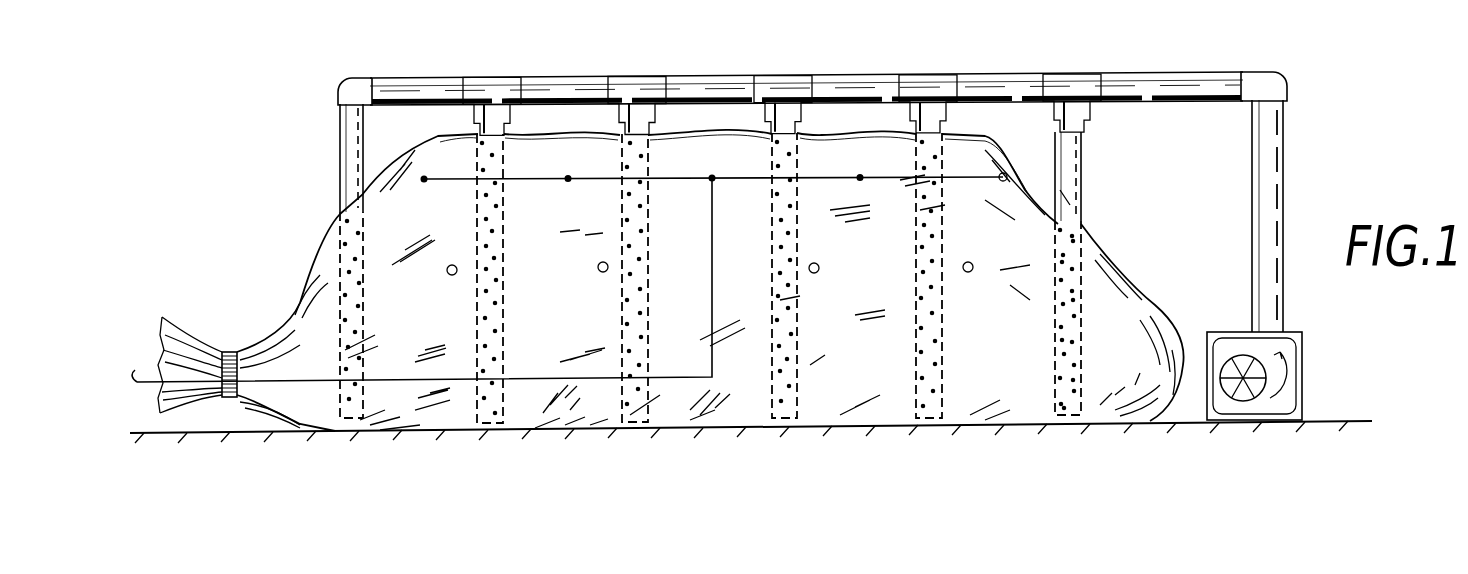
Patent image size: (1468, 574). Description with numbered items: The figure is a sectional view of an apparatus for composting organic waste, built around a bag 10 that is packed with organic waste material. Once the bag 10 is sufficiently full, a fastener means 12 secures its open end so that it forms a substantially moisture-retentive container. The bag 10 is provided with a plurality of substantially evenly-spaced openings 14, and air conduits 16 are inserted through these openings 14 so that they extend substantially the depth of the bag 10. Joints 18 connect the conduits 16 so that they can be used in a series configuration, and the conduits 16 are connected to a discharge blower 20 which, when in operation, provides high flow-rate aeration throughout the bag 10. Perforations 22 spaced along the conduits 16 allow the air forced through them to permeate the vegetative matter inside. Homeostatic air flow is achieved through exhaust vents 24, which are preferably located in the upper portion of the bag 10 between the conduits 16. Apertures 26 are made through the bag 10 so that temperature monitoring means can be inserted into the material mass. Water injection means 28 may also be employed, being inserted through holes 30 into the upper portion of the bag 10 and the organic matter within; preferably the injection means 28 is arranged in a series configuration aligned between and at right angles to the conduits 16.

The bag 10 is at (316, 258).
The fastener means 12 is at (228, 352).
The openings 14 is at (790, 130).
The air conduit 16 is at (1285, 162).
The joints 18 is at (487, 80).
The blower 20 is at (1302, 352).
The perforations 22 is at (640, 306).
The exhaust vents 24 is at (1013, 152).
The apertures 26 is at (448, 276).
The water injection means 28 is at (712, 320).
The holes 30 is at (860, 178).